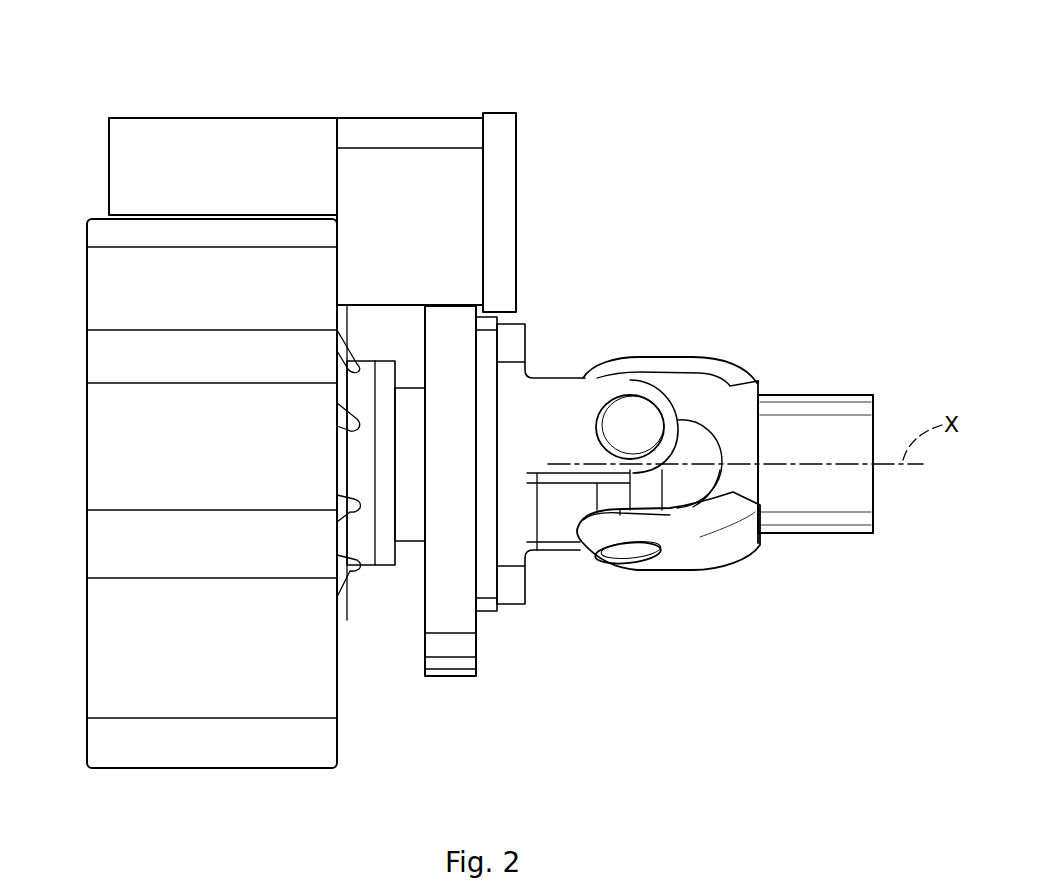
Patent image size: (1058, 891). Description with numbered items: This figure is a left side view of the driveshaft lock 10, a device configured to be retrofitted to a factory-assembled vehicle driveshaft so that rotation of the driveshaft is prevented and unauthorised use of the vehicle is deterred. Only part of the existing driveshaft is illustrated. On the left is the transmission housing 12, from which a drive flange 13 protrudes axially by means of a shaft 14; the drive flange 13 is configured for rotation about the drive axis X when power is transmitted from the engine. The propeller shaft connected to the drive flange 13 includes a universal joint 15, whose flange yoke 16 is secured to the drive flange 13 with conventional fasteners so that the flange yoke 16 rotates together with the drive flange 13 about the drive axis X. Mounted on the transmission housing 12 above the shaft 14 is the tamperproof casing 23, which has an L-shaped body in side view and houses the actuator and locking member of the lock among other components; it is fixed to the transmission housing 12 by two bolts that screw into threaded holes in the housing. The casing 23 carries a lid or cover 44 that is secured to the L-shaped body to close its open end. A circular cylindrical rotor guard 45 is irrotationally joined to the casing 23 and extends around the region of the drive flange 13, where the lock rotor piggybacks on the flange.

The driveshaft lock 10 is at (458, 169).
The transmission housing 12 is at (137, 652).
The drive flange 13 is at (476, 514).
The shaft 14 is at (405, 522).
The universal joint 15 is at (667, 342).
The flange yoke 16 is at (557, 398).
The tamperproof casing 23 is at (368, 116).
The lid or cover 44 is at (498, 222).
The rotor guard 45 is at (447, 662).